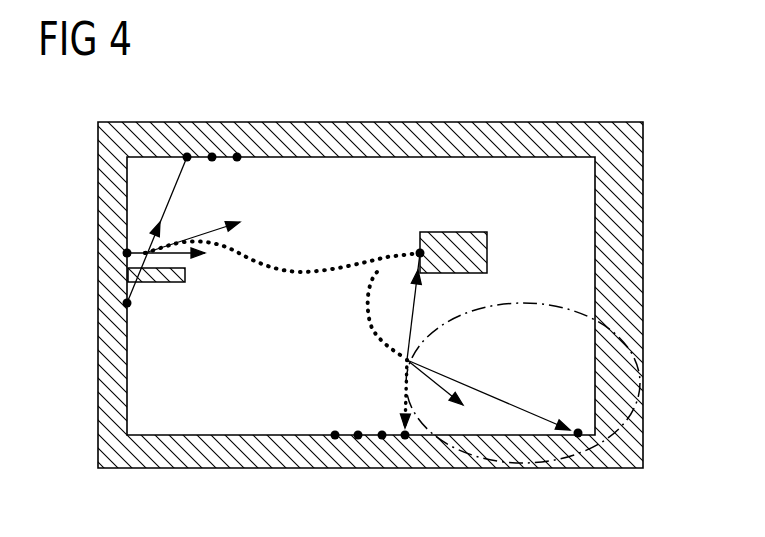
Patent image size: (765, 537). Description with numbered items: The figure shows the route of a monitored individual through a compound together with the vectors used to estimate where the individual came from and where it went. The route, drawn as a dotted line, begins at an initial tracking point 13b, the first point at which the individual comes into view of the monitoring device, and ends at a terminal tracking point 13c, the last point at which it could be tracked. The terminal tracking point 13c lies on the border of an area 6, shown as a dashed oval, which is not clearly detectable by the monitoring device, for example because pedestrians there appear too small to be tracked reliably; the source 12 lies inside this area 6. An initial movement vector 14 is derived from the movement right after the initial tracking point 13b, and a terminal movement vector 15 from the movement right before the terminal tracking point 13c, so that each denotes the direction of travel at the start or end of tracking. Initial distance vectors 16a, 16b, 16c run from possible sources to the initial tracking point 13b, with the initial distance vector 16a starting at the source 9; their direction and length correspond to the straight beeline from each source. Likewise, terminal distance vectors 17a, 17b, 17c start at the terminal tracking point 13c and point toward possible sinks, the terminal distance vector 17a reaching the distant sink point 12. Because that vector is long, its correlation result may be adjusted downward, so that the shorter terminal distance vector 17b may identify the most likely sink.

The area 6 is at (530, 305).
The source 9 is at (127, 253).
The source 12 is at (578, 430).
The initial tracking point 13b is at (145, 253).
The terminal tracking point 13c is at (405, 361).
The initial movement vector 14 is at (215, 228).
The terminal movement vector 15 is at (430, 378).
The initial distance vector 16a is at (180, 258).
The initial distance vector 16b is at (167, 208).
The initial distance vector 16c is at (130, 303).
The terminal distance vector 17a is at (507, 398).
The terminal distance vector 17b is at (402, 398).
The terminal distance vector 17c is at (418, 306).